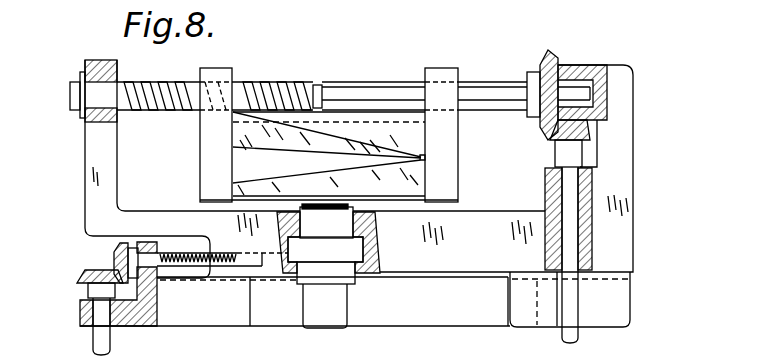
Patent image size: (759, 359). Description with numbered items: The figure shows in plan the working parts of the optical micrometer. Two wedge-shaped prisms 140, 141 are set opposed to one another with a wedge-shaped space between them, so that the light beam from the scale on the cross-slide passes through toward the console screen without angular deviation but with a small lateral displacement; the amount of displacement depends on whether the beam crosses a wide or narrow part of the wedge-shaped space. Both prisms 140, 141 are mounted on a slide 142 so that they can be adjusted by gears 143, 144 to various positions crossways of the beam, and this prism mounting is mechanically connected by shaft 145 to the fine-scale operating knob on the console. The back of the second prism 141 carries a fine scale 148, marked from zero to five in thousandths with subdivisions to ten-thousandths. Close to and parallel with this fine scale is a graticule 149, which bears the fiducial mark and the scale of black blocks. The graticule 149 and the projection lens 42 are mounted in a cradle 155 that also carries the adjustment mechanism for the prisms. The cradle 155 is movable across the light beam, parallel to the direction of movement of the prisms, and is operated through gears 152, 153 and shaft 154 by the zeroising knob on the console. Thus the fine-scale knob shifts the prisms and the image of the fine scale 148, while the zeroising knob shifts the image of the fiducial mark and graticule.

The projection lens 42 is at (338, 313).
The wedge-shaped prism 140 is at (246, 132).
The wedge-shaped prism 141 is at (416, 173).
The slide 142 is at (440, 73).
The gear 143 is at (547, 54).
The gear 144 is at (552, 139).
The shaft 145 is at (572, 307).
The fine scale 148 is at (371, 200).
The graticule 149 is at (322, 207).
The gear 152 is at (113, 252).
The gear 153 is at (92, 272).
The shaft 154 is at (105, 338).
The cradle 155 is at (493, 228).